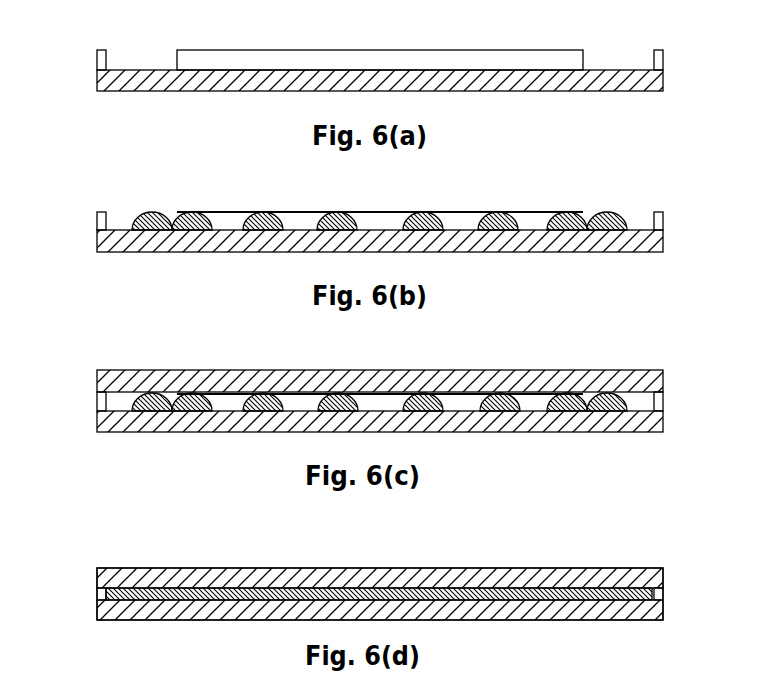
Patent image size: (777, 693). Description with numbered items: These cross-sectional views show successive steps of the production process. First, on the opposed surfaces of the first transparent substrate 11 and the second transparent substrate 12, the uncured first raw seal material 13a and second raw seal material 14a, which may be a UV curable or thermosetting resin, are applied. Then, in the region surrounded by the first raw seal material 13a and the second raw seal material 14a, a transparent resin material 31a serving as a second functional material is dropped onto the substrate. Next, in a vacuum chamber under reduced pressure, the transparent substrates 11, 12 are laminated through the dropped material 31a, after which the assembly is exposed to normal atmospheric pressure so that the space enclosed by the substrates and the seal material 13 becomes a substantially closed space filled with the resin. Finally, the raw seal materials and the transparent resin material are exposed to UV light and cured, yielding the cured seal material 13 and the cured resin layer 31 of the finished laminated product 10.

In FIG. 6D, the display device 10 is at (524, 554).
In FIG. 6A, the first transparent substrate 11 is at (238, 92).
In FIG. 6B, the first transparent substrate 11 is at (252, 252).
In FIG. 6C, the first transparent substrate 11 is at (203, 432).
In FIG. 6D, the first transparent substrate 11 is at (180, 620).
In FIG. 6C, the second transparent substrate 12 is at (203, 370).
In FIG. 6D, the second transparent substrate 12 is at (180, 568).
In FIG. 6D, the seal material 13 is at (97, 592).
In FIG. 6A, the first raw seal material 13a is at (102, 50).
In FIG. 6B, the first raw seal material 13a is at (102, 212).
In FIG. 6C, the first raw seal material 13a is at (97, 400).
In FIG. 6A, the second raw seal material 14a is at (333, 50).
In FIG. 6D, the adhesive layer 31 is at (277, 590).
In FIG. 6B, the transparent resin material 31a is at (262, 215).
In FIG. 6C, the transparent resin material 31a is at (273, 392).